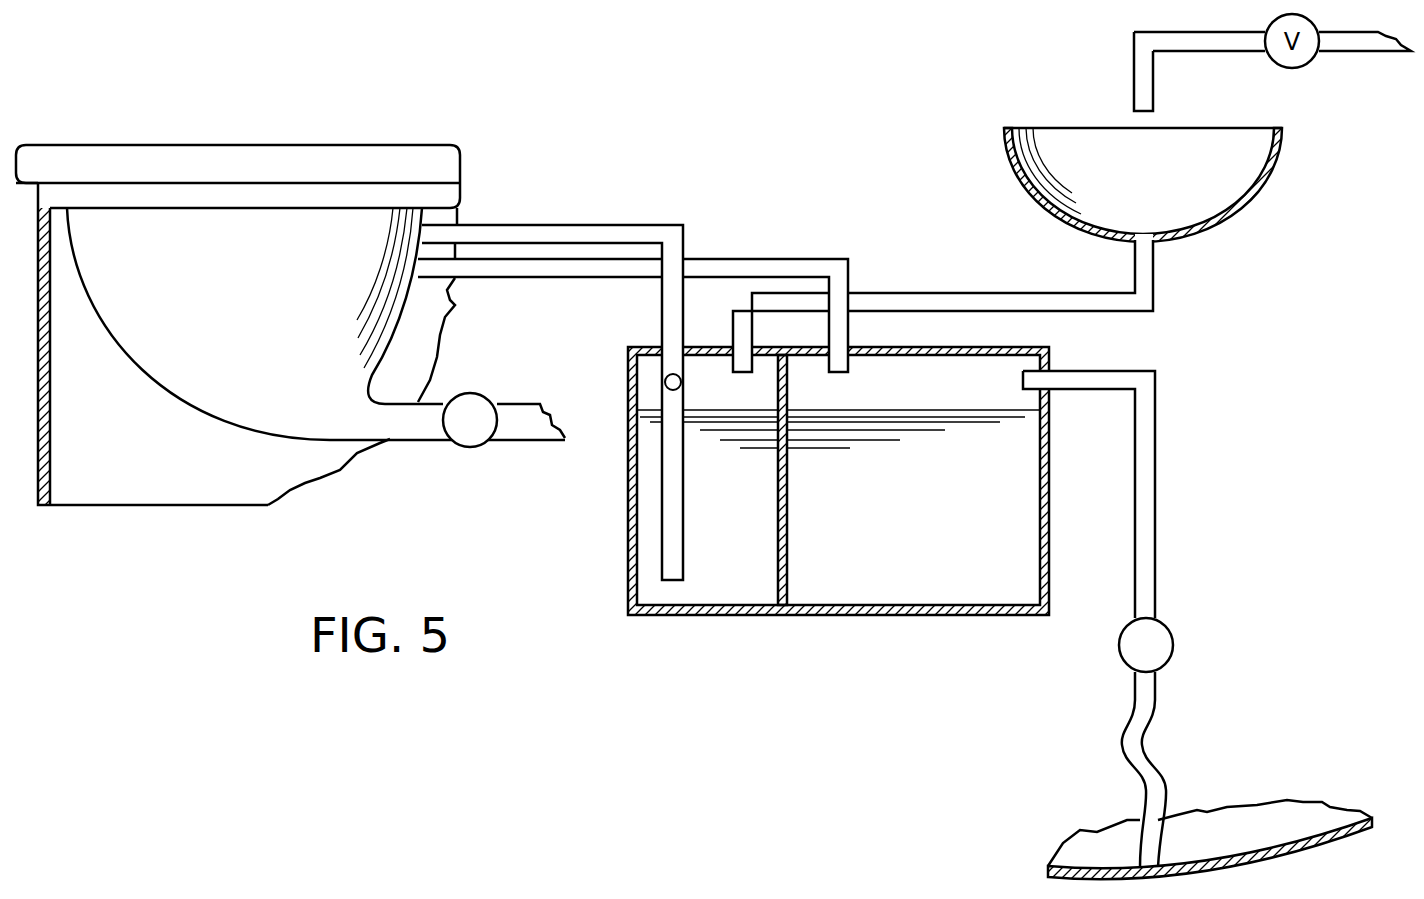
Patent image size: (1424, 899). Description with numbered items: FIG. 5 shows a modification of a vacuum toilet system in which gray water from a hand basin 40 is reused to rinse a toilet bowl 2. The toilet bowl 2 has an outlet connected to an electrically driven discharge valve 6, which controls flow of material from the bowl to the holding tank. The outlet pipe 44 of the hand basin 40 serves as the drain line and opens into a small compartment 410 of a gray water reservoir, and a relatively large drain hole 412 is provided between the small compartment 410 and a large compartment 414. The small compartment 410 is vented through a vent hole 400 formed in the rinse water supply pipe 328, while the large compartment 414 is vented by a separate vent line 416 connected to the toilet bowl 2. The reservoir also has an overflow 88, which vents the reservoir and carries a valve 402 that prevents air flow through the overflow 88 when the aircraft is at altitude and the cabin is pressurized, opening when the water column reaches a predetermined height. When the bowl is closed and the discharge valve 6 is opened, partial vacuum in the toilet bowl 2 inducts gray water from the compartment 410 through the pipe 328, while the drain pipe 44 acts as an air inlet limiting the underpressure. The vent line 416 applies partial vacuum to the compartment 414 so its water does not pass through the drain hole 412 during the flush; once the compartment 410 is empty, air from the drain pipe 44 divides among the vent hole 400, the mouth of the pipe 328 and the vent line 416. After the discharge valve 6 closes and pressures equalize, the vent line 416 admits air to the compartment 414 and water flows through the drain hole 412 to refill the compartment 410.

The toilet bowl 2 is at (200, 387).
The discharge valve 6 is at (472, 393).
The hand basin 40 is at (1048, 207).
The outlet pipe 44 is at (1155, 302).
The overflow 88 is at (1157, 411).
The rinse water supply pipe 328 is at (560, 225).
The vent hole 400 is at (636, 382).
The valve 402 is at (1170, 633).
The small compartment 410 is at (723, 572).
The drain hole 412 is at (790, 582).
The large compartment 414 is at (960, 572).
The vent line 416 is at (763, 259).